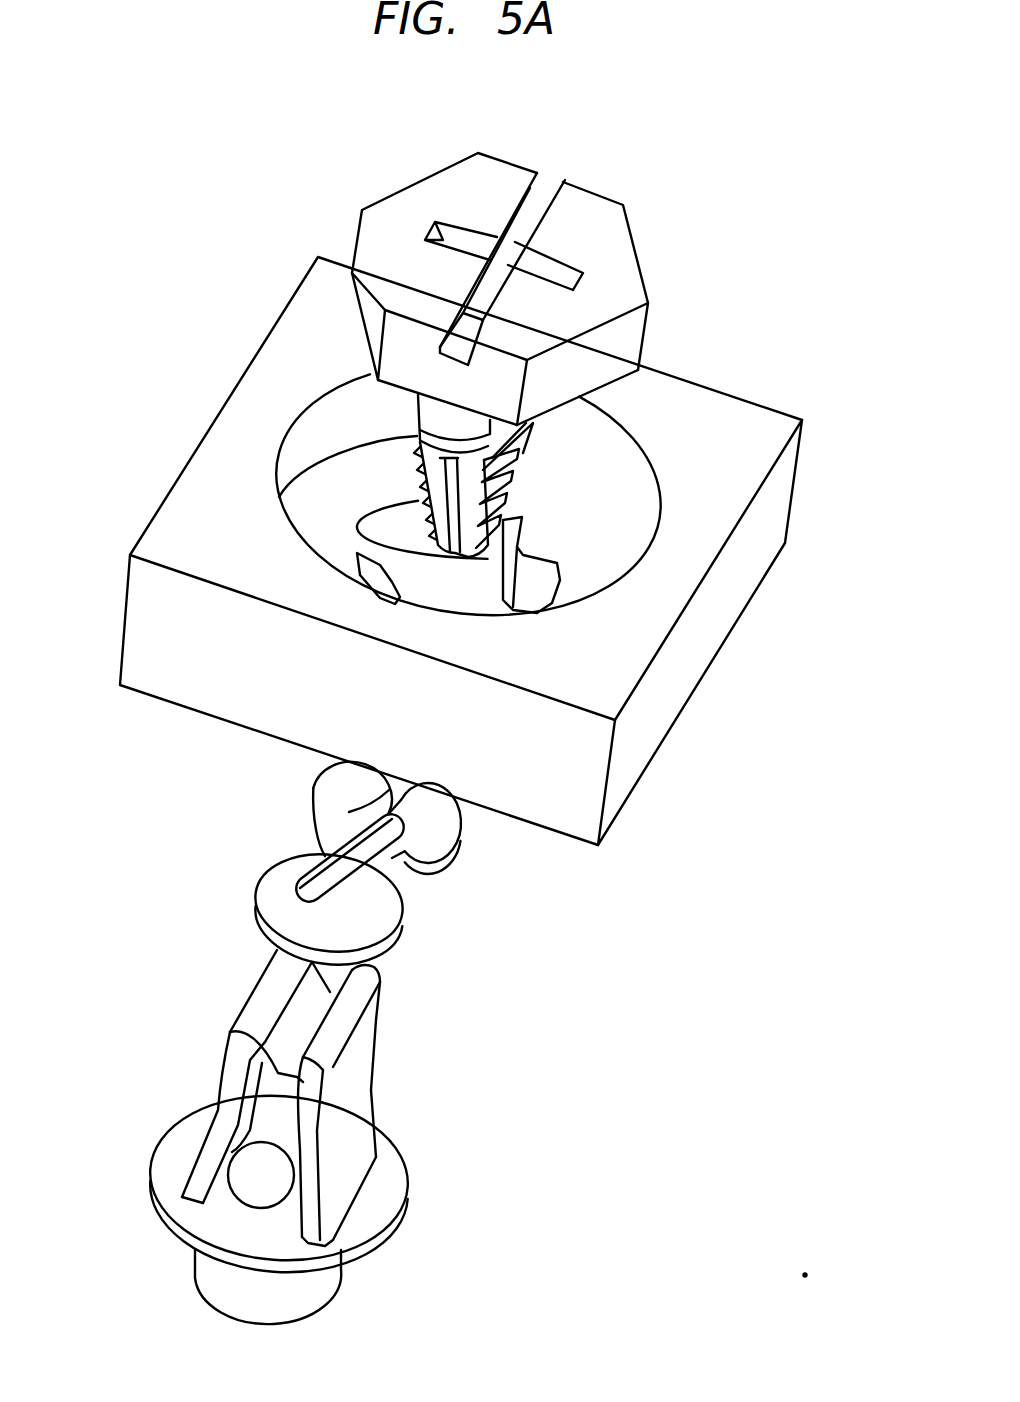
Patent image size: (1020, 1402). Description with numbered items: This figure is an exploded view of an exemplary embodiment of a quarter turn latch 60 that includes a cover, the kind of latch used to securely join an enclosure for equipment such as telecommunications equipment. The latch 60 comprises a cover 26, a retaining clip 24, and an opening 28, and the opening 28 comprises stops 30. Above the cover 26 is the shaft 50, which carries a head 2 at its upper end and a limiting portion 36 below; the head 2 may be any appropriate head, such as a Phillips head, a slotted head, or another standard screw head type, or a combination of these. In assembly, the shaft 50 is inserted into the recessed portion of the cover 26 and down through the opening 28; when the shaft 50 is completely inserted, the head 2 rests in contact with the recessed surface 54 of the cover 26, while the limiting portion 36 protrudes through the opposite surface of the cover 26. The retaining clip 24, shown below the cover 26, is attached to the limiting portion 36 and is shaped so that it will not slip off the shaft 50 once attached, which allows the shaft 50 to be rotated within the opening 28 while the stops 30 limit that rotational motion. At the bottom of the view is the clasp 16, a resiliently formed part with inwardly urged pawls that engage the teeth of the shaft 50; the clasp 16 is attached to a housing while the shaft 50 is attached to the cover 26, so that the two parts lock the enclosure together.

The head 2 is at (608, 212).
The clasp 16 is at (445, 1086).
The retaining clip 24 is at (267, 880).
The cover 26 is at (708, 402).
The opening 28 is at (478, 602).
The stops 30 is at (390, 583).
The limiting portion 36 is at (420, 413).
The shaft 50 is at (370, 166).
The recessed surface 54 is at (582, 507).
The latch 60 is at (114, 147).